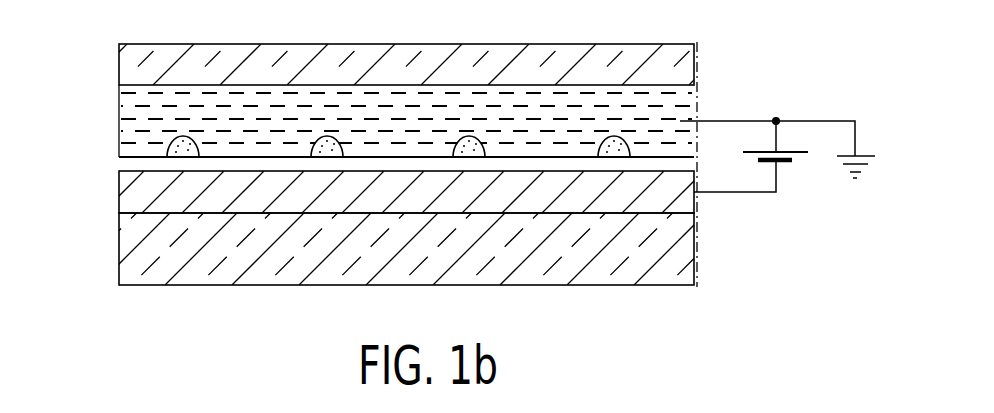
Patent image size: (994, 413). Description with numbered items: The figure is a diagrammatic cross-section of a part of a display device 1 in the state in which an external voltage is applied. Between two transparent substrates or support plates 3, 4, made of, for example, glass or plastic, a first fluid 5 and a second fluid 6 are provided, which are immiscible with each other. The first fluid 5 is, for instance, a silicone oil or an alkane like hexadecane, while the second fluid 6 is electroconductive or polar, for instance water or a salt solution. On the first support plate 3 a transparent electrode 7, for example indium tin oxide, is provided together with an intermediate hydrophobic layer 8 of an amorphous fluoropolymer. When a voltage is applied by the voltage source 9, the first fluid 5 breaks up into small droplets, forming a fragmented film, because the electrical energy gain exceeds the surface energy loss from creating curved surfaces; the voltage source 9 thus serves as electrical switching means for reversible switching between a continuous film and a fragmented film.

The display device 1 is at (62, 291).
The first support plate 3 is at (138, 240).
The second support plate 4 is at (138, 58).
The first fluid 5 is at (167, 149).
The second fluid 6 is at (138, 103).
The transparent electrode 7 is at (138, 193).
The hydrophobic layer 8 is at (138, 163).
The voltage source 9 is at (791, 161).